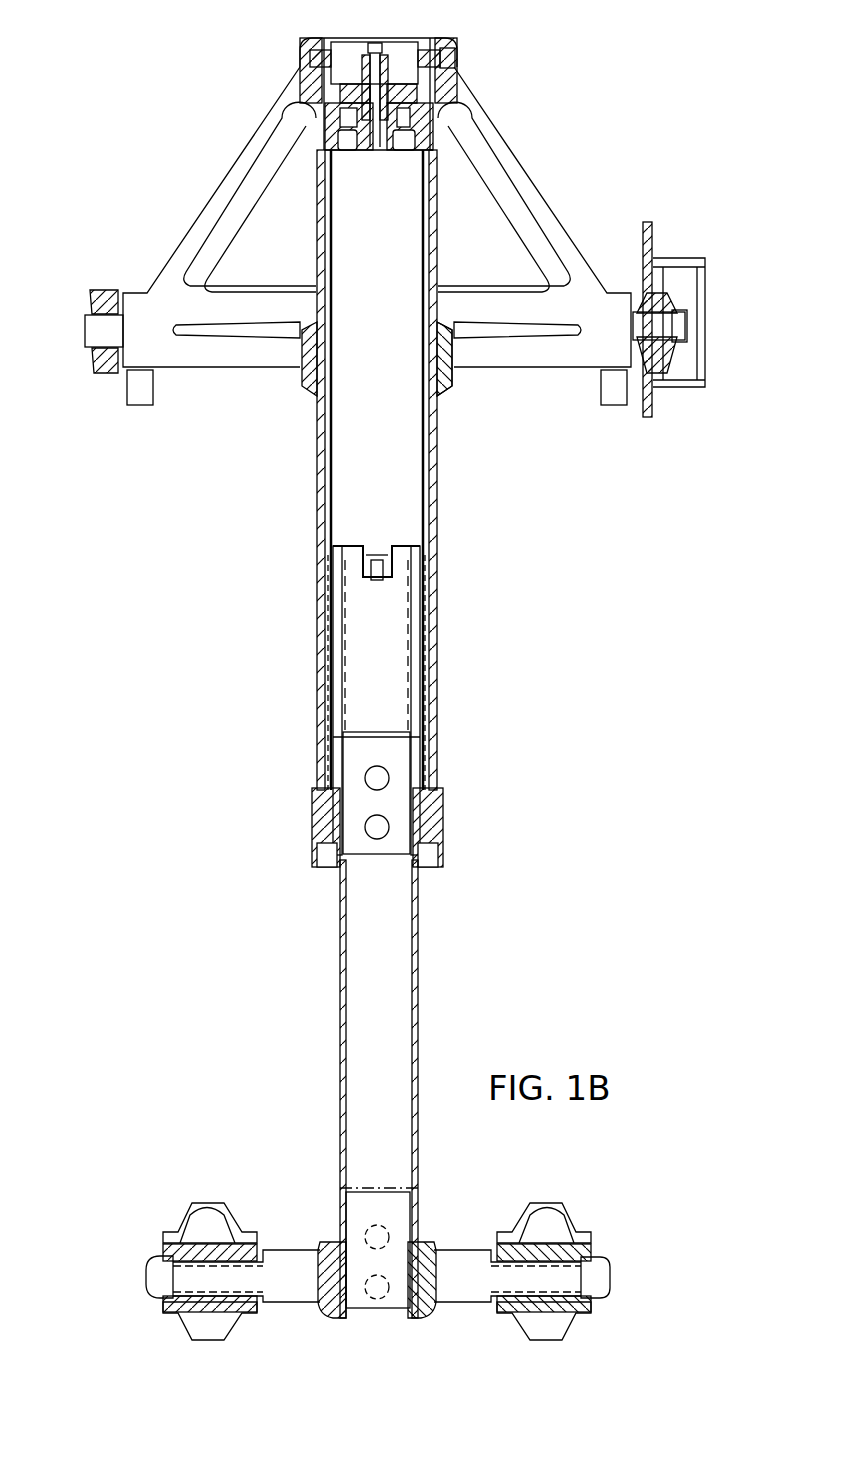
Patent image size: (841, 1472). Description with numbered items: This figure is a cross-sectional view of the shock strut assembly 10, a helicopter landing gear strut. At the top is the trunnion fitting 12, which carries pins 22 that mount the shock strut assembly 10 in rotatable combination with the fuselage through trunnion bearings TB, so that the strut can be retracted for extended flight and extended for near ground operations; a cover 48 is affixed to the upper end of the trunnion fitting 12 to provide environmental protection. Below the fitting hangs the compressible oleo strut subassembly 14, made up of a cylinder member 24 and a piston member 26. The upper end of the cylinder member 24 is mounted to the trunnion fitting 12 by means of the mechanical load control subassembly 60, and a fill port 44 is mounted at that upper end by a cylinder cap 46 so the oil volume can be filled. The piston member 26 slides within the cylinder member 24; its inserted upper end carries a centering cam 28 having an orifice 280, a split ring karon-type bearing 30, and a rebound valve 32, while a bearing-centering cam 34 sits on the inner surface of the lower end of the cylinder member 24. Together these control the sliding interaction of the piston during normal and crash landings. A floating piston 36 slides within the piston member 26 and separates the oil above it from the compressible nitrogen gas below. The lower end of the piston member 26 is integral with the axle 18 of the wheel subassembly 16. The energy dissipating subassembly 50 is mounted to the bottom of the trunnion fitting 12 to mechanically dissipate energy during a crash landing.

The shock strut assembly 10 is at (523, 955).
The trunnion fitting 12 is at (561, 172).
The compressible oleo strut subassembly 14 is at (492, 502).
The wheel subassembly 16 is at (466, 1193).
The axle 18 is at (275, 1265).
The pins 22 is at (93, 336).
The trunnion bearings TB is at (92, 297).
The cylinder member 24 is at (316, 435).
The piston member 26 is at (417, 985).
The centering cam 28 is at (416, 538).
The orifice 280 is at (378, 545).
The split ring karon-type bearing 30 is at (330, 578).
The rebound valve 32 is at (326, 613).
The bearing-centering cam 34 is at (320, 862).
The floating piston 36 is at (350, 782).
The fill port 44 is at (386, 84).
The cylinder cap 46 is at (378, 150).
The cover 48 is at (375, 44).
The energy dissipating subassembly 50 is at (460, 395).
The mechanical load control subassembly 60 is at (458, 62).